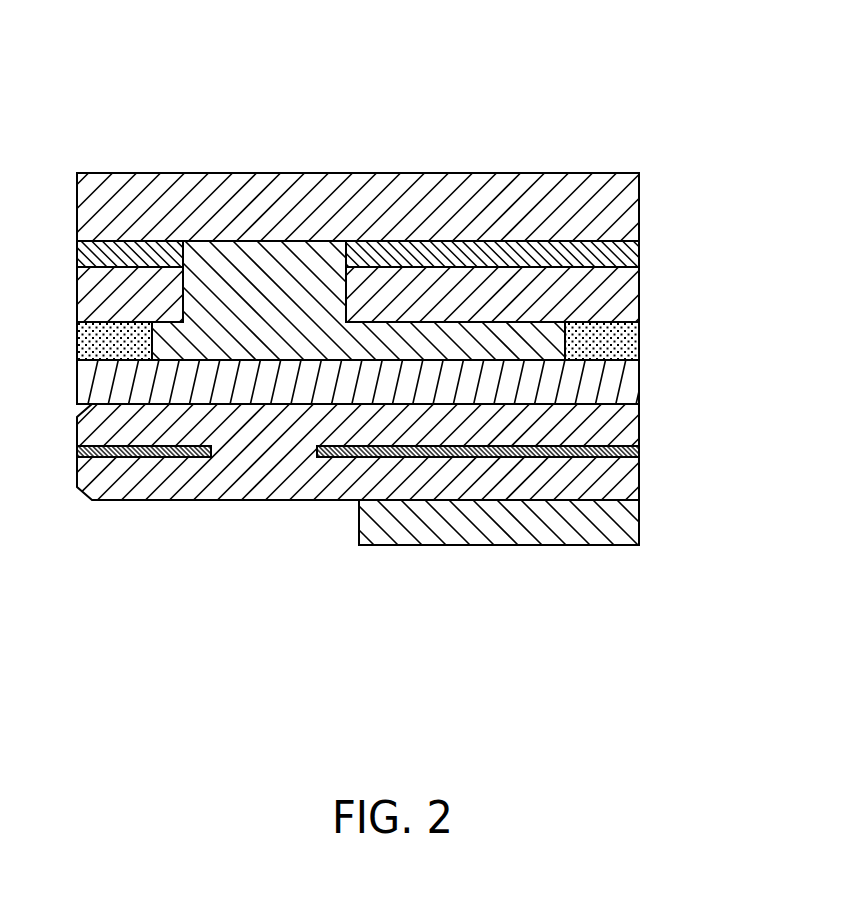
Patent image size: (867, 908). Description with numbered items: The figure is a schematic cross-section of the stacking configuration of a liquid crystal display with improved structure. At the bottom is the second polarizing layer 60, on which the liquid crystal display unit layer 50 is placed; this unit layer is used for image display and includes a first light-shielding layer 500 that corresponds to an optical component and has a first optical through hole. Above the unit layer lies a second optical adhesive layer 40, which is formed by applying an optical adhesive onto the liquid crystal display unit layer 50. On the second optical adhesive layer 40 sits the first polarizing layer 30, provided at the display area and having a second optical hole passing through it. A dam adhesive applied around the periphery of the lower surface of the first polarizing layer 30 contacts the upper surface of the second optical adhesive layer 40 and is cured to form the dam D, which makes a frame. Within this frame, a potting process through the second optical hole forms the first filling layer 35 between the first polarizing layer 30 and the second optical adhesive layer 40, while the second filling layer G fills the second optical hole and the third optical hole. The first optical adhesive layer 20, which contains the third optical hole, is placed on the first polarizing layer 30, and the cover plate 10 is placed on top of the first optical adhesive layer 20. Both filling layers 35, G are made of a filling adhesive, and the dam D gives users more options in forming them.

The cover plate 10 is at (635, 192).
The first optical adhesive layer 20 is at (635, 247).
The first polarizing layer 30 is at (635, 289).
The first filling layer 35 is at (542, 333).
The second filling layer G is at (233, 262).
The dam D is at (637, 342).
The second optical adhesive layer 40 is at (635, 384).
The liquid crystal display unit layer 50 is at (636, 483).
The first light-shielding layer 500 is at (636, 448).
The second polarizing layer 60 is at (625, 523).